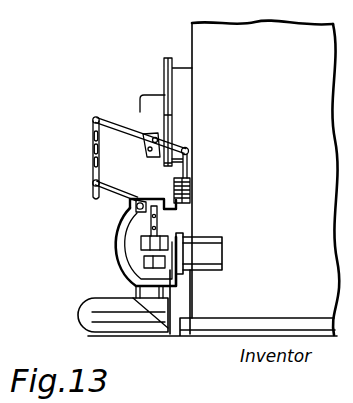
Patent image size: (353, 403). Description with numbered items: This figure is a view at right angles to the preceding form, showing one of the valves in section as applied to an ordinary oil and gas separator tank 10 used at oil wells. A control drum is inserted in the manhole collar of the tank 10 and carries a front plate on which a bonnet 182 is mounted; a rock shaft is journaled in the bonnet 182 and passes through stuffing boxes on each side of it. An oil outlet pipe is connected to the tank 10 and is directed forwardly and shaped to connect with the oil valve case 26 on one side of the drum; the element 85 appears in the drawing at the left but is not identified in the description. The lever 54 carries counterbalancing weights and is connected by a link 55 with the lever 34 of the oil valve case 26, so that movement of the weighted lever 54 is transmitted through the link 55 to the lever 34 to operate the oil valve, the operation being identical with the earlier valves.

The tank 10 is at (192, 33).
The bonnet 182 is at (153, 98).
The lever 54 is at (128, 108).
The link 55 is at (92, 170).
The lever 34 is at (118, 197).
The oil valve case 26 is at (117, 254).
The element 85 is at (24, 213).